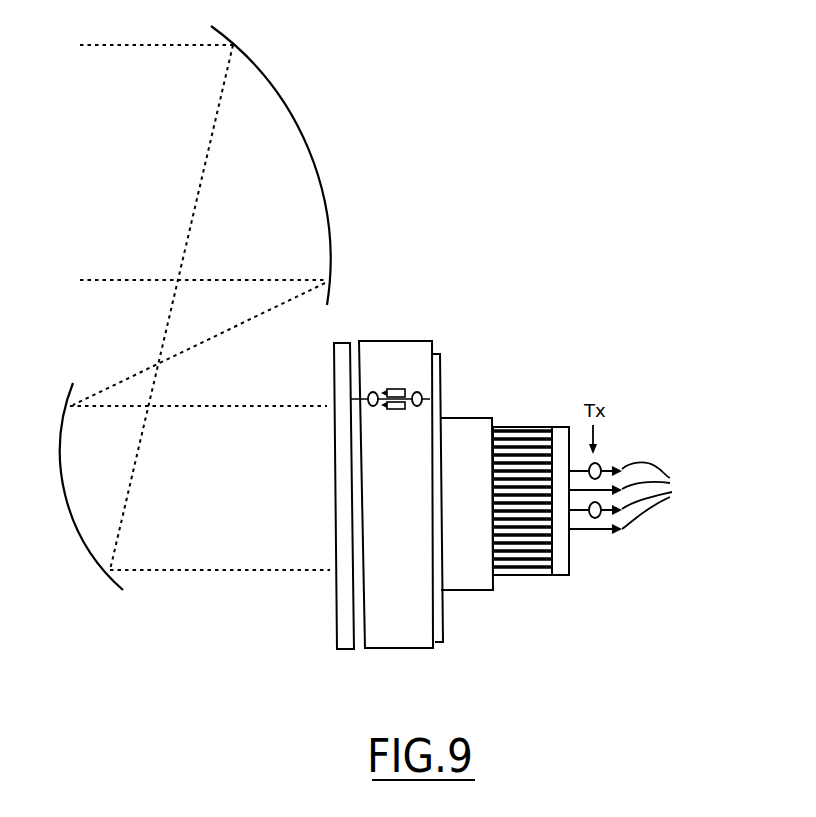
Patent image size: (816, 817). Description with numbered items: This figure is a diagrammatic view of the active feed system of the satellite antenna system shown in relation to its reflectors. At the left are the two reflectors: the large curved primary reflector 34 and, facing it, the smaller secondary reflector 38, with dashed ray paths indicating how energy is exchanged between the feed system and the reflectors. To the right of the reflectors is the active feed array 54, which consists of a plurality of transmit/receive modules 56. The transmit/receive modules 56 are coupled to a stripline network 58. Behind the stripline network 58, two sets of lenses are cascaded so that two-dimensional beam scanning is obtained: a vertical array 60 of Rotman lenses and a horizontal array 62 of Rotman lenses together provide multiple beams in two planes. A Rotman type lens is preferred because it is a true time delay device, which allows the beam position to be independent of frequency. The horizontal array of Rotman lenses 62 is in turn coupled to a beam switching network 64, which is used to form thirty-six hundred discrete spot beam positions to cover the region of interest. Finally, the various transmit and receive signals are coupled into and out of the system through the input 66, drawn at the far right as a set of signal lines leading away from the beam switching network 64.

The primary reflector 34 is at (308, 142).
The secondary reflector 38 is at (80, 535).
The active feed array 54 is at (343, 342).
The transmit/receive modules 56 is at (394, 643).
The stripline network 58 is at (440, 355).
The vertical array of Rotman lenses 60 is at (498, 425).
The horizontal array of Rotman lenses 62 is at (530, 425).
The beam switching network 64 is at (555, 427).
The input 66 is at (664, 495).